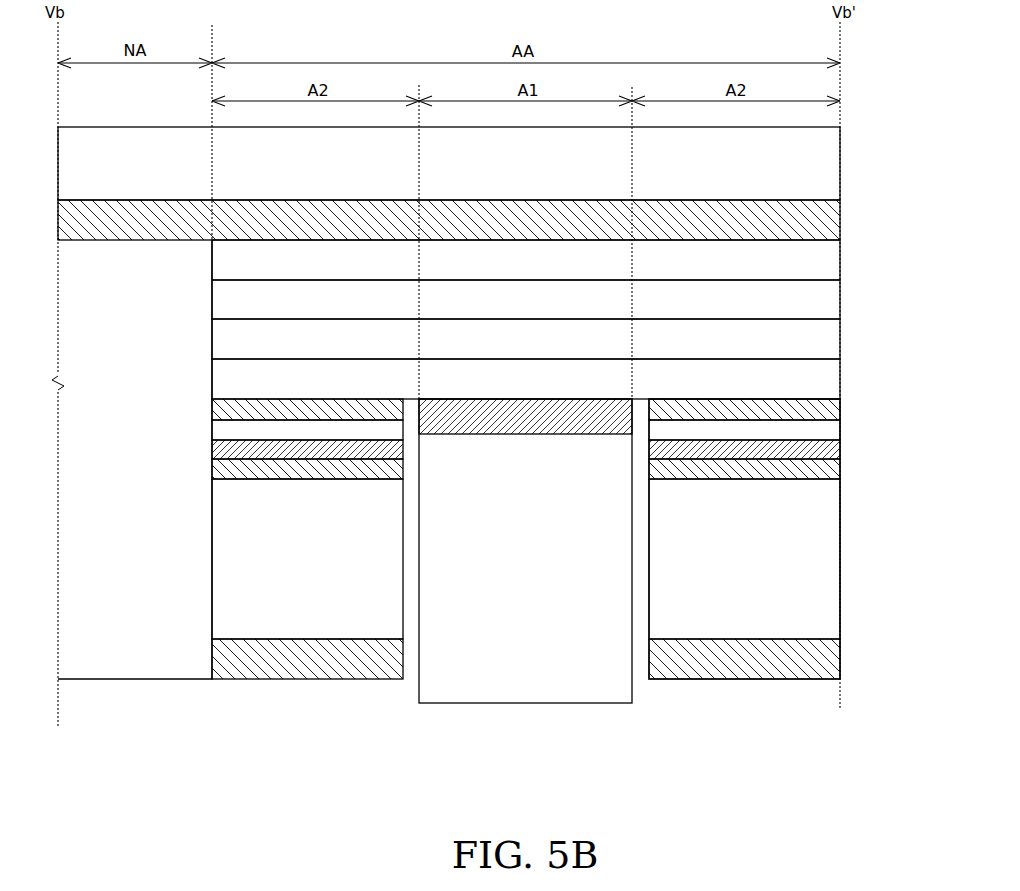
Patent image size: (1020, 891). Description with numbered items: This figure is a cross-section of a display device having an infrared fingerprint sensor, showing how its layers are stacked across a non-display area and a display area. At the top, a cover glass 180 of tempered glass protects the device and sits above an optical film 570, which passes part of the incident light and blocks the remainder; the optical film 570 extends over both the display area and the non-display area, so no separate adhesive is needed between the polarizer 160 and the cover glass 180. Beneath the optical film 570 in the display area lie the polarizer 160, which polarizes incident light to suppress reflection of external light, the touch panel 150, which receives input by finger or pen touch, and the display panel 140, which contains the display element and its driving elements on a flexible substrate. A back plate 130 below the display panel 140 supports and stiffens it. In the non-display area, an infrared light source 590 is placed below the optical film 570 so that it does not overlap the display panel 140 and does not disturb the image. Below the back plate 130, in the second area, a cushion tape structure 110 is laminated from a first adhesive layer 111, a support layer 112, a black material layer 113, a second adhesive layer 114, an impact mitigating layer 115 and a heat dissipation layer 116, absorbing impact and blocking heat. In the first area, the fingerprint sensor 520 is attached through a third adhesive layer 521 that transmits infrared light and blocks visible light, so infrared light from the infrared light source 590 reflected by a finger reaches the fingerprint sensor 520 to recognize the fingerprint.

The cushion tape structure 110 is at (906, 407).
The first adhesive layer 111 is at (818, 410).
The support layer 112 is at (818, 429).
The black material layer 113 is at (818, 449).
The second adhesive layer 114 is at (818, 470).
The impact mitigating layer 115 is at (818, 585).
The heat dissipation layer 116 is at (818, 665).
The back plate 130 is at (818, 382).
The display panel 140 is at (818, 340).
The touch panel 150 is at (818, 300).
The polarizer 160 is at (818, 260).
The cover glass 180 is at (818, 165).
The fingerprint sensor 520 is at (573, 650).
The third adhesive layer 521 is at (479, 418).
The optical film 570 is at (818, 215).
The infrared light source 590 is at (145, 662).